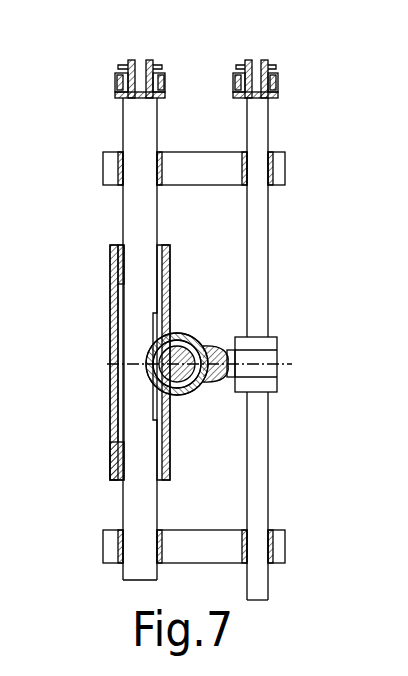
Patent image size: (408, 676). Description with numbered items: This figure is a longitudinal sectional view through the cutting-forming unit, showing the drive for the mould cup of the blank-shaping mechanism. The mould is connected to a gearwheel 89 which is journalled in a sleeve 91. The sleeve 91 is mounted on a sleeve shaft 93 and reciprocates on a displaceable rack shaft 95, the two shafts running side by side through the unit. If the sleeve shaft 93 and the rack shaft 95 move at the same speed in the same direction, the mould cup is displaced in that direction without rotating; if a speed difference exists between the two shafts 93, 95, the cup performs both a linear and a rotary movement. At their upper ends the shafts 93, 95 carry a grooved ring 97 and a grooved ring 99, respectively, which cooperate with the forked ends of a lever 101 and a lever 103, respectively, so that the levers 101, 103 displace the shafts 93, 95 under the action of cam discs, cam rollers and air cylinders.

The gearwheel 89 is at (189, 330).
The sleeve 91 is at (222, 349).
The sleeve shaft 93 is at (263, 218).
The rack shaft 95 is at (150, 213).
The grooved ring 97 is at (119, 68).
The grooved ring 99 is at (241, 68).
The lever 101 is at (116, 82).
The lever 103 is at (278, 82).